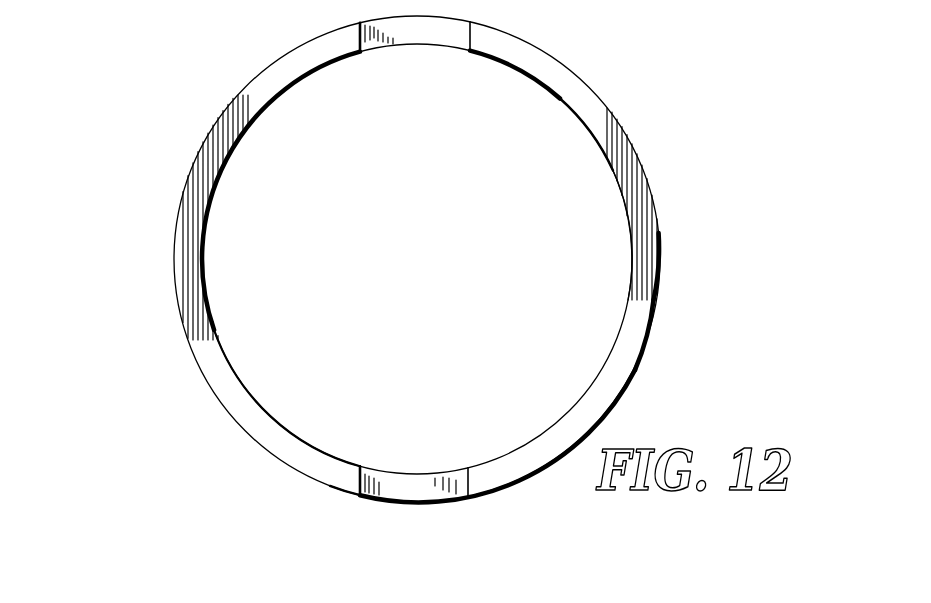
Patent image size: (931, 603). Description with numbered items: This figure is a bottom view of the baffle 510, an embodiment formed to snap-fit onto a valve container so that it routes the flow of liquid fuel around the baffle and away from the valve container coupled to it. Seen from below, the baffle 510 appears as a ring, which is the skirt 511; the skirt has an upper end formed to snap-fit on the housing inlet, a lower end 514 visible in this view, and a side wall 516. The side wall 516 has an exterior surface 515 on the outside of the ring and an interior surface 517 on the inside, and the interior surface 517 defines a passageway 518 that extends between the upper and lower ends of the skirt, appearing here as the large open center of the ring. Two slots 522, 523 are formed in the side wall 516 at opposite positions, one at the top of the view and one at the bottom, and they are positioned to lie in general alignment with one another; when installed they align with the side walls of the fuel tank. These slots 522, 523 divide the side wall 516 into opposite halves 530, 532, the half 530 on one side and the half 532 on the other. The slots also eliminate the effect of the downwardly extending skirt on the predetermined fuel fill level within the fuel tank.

The baffle 510 is at (704, 208).
The skirt 511 is at (668, 278).
The lower end 514 is at (645, 332).
The exterior surface 515 is at (645, 175).
The side wall 516 is at (610, 118).
The interior surface 517 is at (630, 227).
The passageway 518 is at (506, 393).
The slot 522 is at (387, 497).
The slot 523 is at (383, 47).
The half of side wall 530 is at (170, 326).
The half of side wall 532 is at (642, 398).